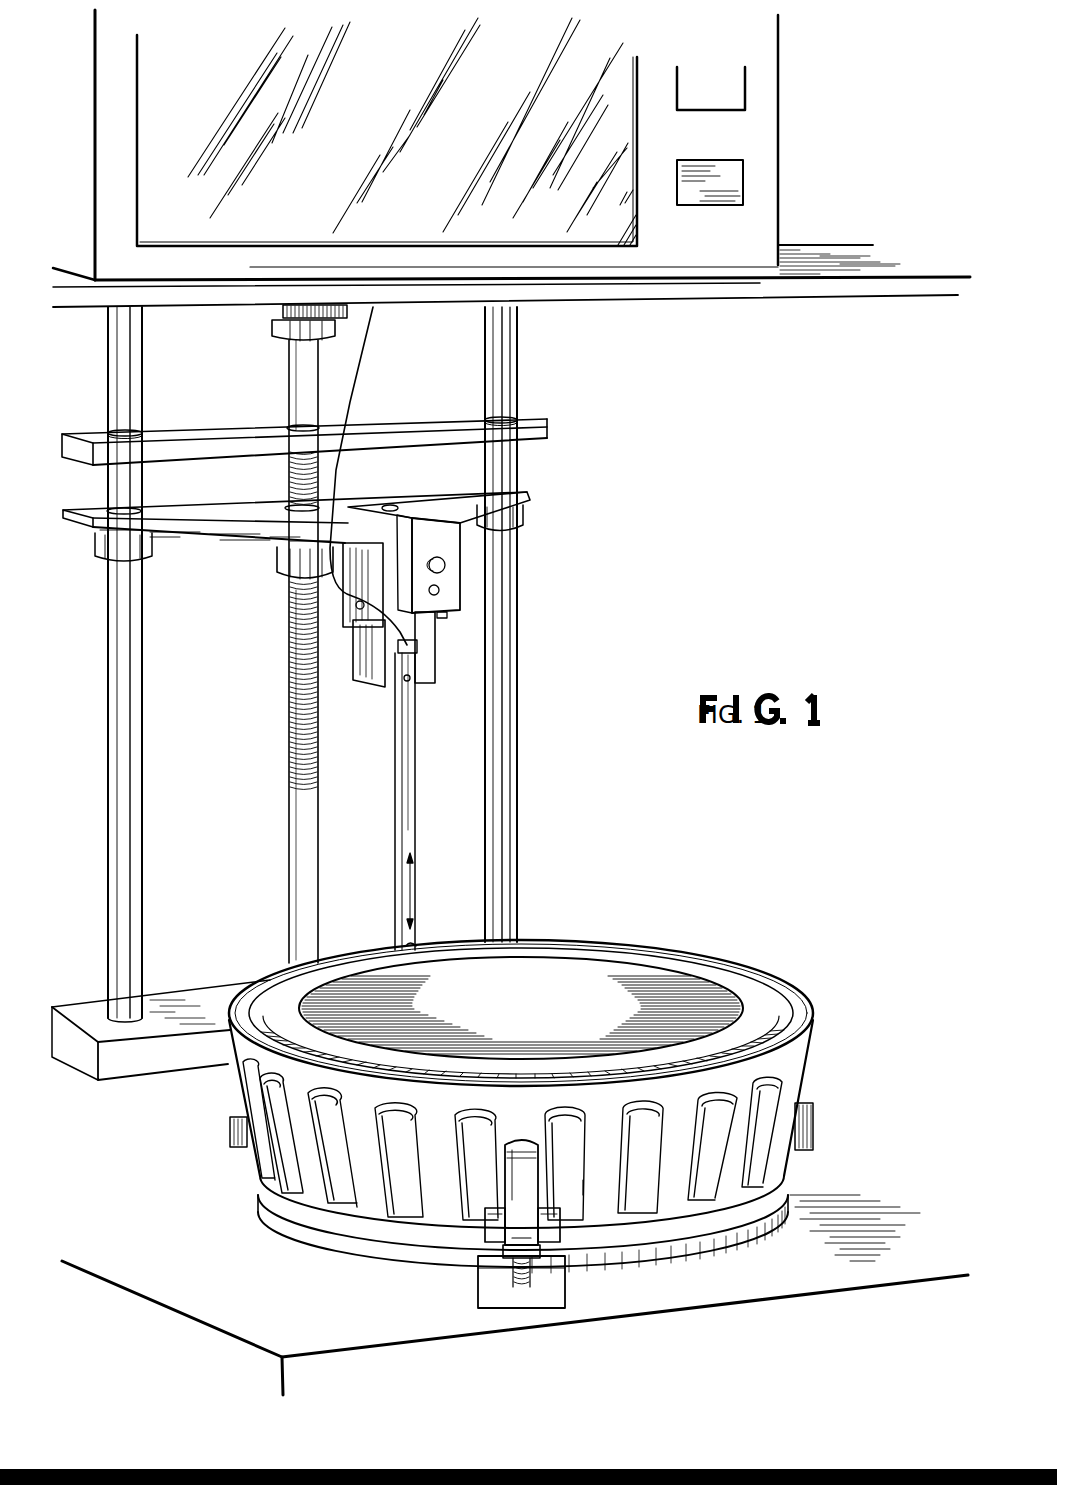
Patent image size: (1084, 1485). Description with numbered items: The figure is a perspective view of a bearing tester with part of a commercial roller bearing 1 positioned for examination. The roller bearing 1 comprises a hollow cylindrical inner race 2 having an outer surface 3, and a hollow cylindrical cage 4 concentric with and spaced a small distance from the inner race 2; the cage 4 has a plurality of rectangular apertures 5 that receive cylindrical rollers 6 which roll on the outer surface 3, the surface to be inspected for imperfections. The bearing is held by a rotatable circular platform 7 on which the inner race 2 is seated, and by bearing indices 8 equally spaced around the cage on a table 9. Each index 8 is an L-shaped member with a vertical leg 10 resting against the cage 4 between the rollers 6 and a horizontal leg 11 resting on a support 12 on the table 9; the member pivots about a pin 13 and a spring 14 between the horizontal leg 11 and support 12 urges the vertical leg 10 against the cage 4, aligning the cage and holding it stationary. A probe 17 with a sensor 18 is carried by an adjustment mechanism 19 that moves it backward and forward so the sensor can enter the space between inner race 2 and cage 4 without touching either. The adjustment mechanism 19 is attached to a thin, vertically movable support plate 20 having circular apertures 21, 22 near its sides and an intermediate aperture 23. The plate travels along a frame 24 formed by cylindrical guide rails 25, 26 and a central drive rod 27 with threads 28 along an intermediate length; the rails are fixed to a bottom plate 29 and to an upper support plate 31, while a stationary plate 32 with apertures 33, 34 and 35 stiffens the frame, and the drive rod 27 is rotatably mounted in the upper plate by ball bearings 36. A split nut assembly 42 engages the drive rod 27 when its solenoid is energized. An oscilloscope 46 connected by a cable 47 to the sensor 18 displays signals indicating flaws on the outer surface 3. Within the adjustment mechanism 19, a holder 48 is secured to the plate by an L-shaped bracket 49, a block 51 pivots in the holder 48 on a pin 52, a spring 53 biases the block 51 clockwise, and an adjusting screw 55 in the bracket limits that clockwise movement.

The roller bearing 1 is at (771, 951).
The inner race 2 is at (760, 1000).
The outer surface 3 is at (808, 1035).
The cage 4 is at (670, 1190).
The rectangular apertures 5 is at (585, 1190).
The cylindrical rollers 6 is at (337, 1168).
The circular platform 7 is at (368, 1228).
The bearing indices 8 is at (506, 1173).
The table 9 is at (822, 1262).
The vertical leg 10 is at (518, 1160).
The horizontal leg 11 is at (517, 1242).
The support 12 is at (232, 1128).
The pin 13 is at (575, 1235).
The spring 14 is at (523, 1283).
The probe 17 is at (397, 803).
The sensor 18 is at (418, 945).
The adjustment mechanism 19 is at (454, 567).
The support plate 20 is at (236, 533).
The circular aperture 21 is at (122, 512).
The circular aperture 22 is at (498, 492).
The circular aperture 23 is at (296, 508).
The frame 24 is at (531, 404).
The guide rail 25 is at (136, 700).
The guide rail 26 is at (503, 617).
The drive rod 27 is at (292, 760).
The threads 28 is at (310, 700).
The bottom plate 29 is at (193, 1005).
The upper support plate 31 is at (415, 290).
The stationary plate 32 is at (418, 420).
The circular aperture 33 is at (118, 435).
The circular aperture 34 is at (498, 422).
The circular aperture 35 is at (300, 425).
The ball bearings 36 is at (273, 330).
The split nut assembly 42 is at (293, 568).
The oscilloscope 46 is at (543, 220).
The cable 47 is at (357, 385).
The holder 48 is at (363, 567).
The L-shaped bracket 49 is at (418, 512).
The block 51 is at (427, 670).
The pin 52 is at (358, 607).
The spring 53 is at (438, 593).
The adjusting screw 55 is at (437, 560).